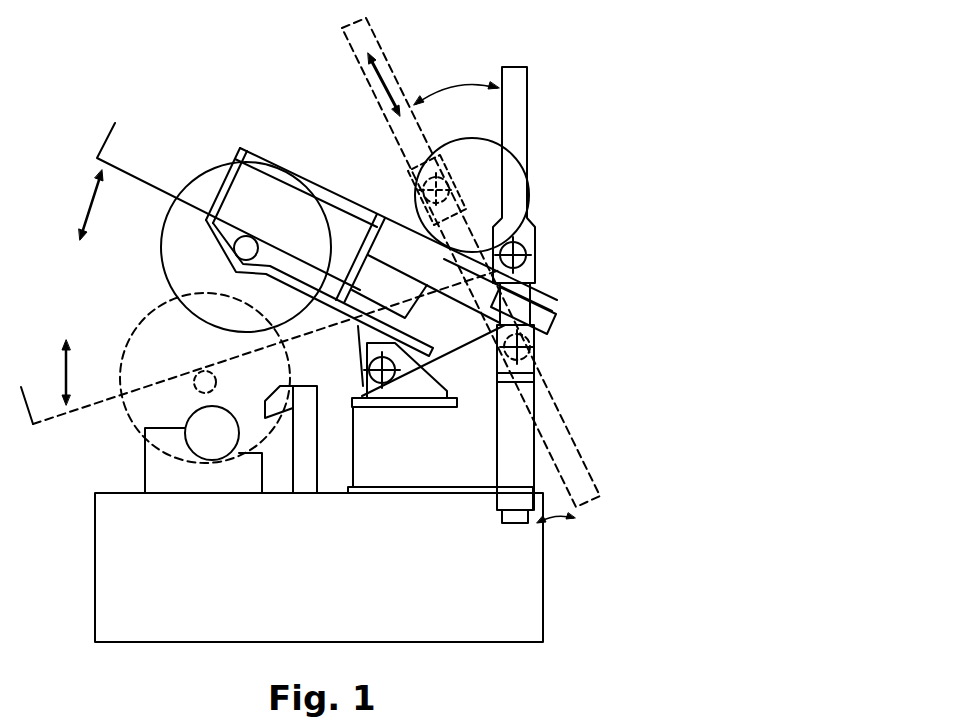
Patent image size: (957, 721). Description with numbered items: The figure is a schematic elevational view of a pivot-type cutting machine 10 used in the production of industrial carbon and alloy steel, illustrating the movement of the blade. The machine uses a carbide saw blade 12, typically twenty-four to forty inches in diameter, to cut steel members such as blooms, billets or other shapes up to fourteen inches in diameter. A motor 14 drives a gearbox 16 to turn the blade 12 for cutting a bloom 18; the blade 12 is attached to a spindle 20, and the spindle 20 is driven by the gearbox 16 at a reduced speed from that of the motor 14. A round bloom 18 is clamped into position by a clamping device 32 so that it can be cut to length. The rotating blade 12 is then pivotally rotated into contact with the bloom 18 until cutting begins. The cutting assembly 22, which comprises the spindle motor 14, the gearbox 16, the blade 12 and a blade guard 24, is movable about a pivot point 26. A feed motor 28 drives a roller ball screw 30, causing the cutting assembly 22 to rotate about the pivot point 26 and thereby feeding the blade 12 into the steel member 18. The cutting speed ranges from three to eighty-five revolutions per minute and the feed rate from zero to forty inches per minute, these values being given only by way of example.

The pivot-type cutting machine 10 is at (163, 52).
The carbide saw blade 12 is at (148, 305).
The motor 14 is at (476, 137).
The gearbox 16 is at (350, 217).
The bloom 18 is at (200, 446).
The spindle 20 is at (244, 240).
The cutting assembly 22 is at (556, 344).
The blade guard 24 is at (108, 135).
The pivot point 26 is at (528, 338).
The feed motor 28 is at (588, 458).
The roller ball screw 30 is at (522, 141).
The clamping device 32 is at (313, 470).